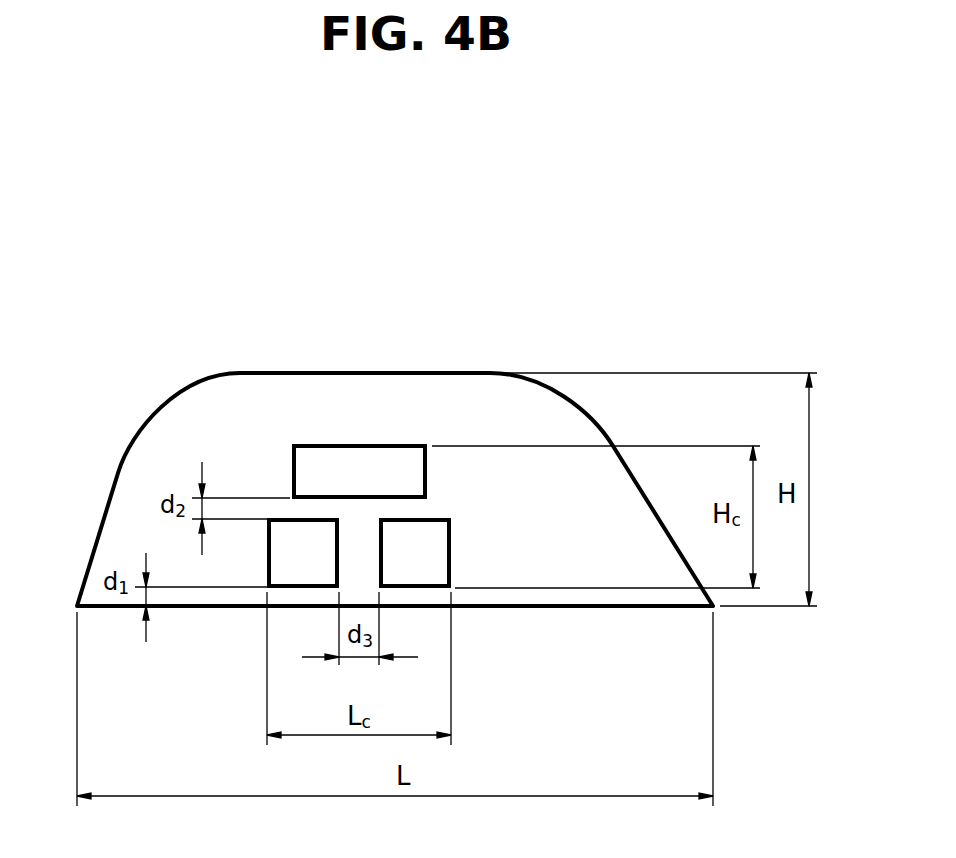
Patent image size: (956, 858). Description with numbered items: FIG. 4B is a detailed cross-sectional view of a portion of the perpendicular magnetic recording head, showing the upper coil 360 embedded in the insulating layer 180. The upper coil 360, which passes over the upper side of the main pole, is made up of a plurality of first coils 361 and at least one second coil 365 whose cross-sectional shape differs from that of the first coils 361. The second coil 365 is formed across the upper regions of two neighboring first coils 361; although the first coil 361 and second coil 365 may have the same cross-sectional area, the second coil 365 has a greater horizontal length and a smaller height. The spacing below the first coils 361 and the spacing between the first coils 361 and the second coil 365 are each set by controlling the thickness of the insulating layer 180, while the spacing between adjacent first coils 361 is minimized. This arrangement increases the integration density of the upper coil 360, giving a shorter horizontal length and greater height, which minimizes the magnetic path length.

The insulating layer 180 is at (212, 400).
The upper coil 360 is at (424, 296).
The second coil 365 is at (318, 458).
The first coil 361 is at (322, 538).